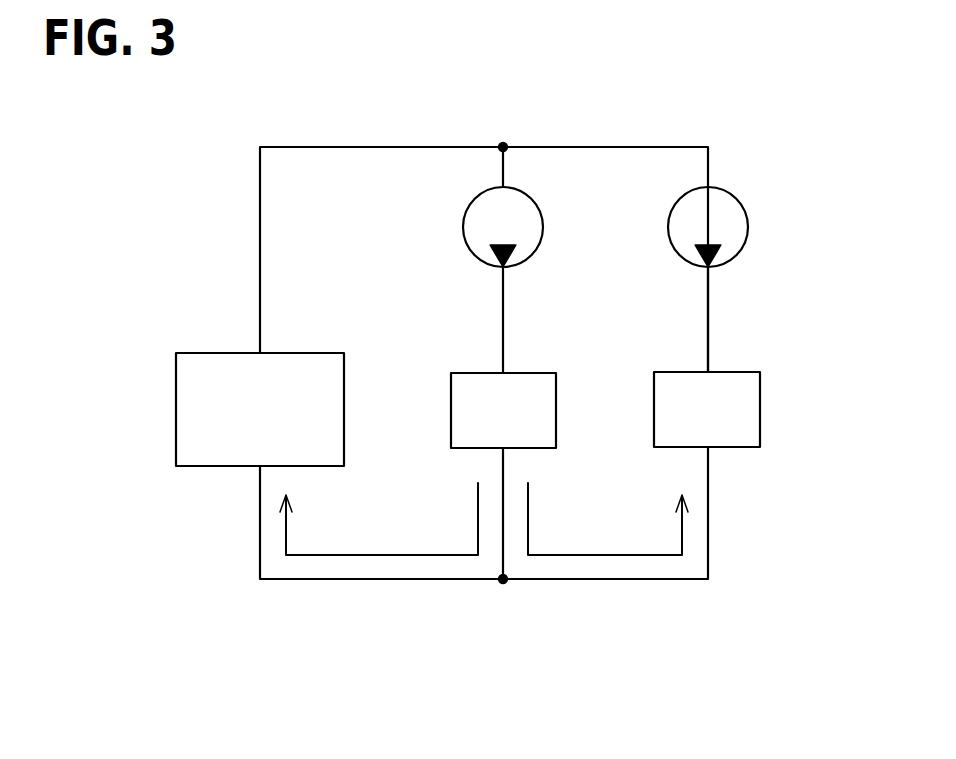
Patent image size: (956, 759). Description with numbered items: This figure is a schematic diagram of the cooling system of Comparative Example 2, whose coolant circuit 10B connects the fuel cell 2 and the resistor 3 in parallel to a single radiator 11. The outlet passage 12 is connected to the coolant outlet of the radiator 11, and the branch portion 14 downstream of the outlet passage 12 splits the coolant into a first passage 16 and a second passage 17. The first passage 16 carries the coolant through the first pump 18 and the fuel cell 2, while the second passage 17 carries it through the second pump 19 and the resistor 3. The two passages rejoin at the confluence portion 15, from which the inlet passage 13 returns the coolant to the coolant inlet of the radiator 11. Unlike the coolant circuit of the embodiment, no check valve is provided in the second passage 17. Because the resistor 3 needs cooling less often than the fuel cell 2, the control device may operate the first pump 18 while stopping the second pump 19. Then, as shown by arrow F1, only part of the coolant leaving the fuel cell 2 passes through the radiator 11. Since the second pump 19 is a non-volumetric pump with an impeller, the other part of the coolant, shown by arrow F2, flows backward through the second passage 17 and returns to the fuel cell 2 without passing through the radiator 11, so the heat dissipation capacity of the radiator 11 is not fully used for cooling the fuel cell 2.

The coolant circuit 10B is at (258, 208).
The radiator 11 is at (176, 381).
The outlet passage 12 is at (341, 146).
The inlet passage 13 is at (392, 580).
The branch portion 14 is at (503, 145).
The confluence portion 15 is at (503, 585).
The first passage 16 is at (503, 312).
The second passage 17 is at (710, 308).
The first pump 18 is at (466, 220).
The second pump 19 is at (748, 218).
The fuel cell 2 is at (557, 390).
The resistor 3 is at (762, 390).
The arrow F1 is at (311, 556).
The arrow F2 is at (643, 556).